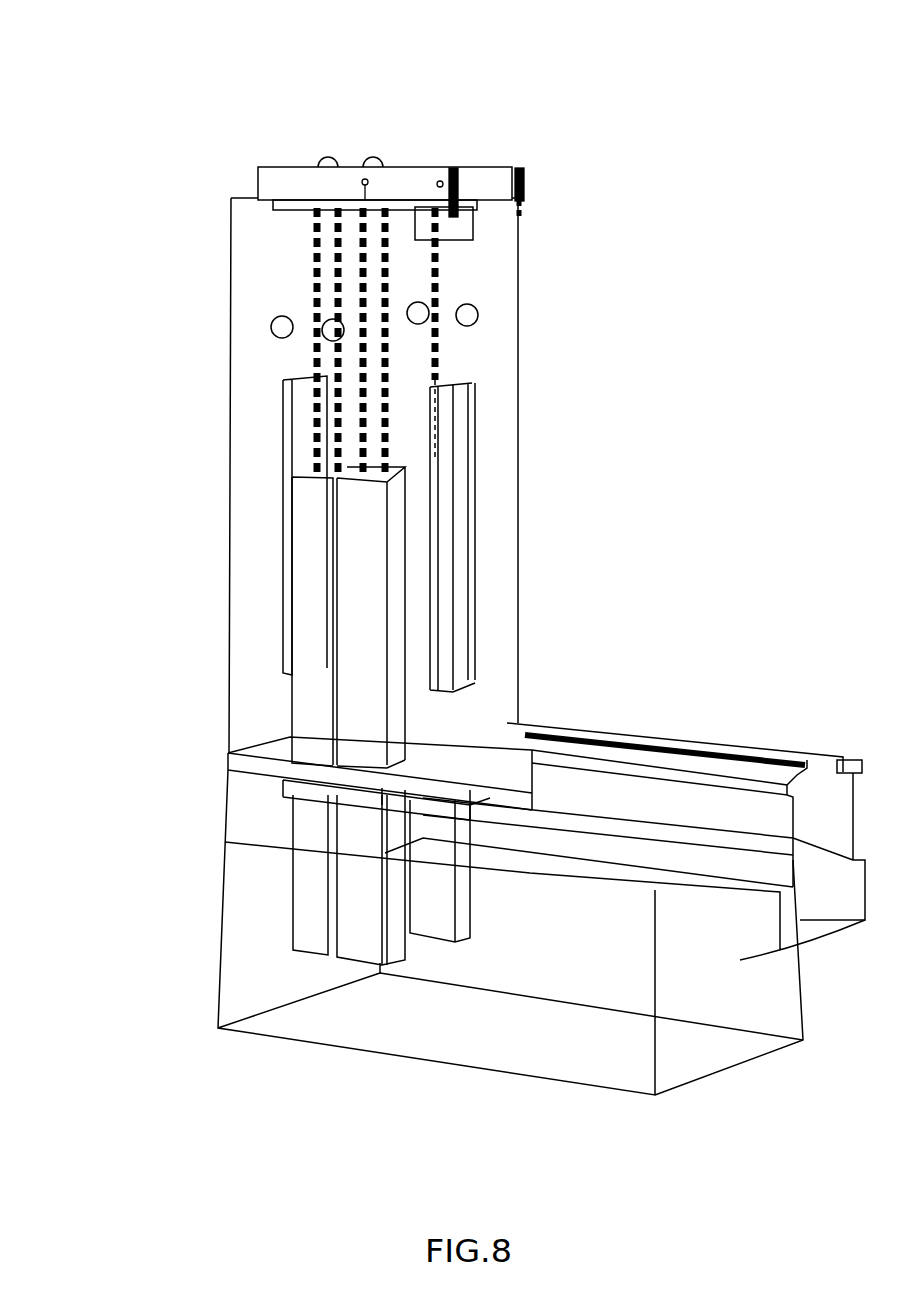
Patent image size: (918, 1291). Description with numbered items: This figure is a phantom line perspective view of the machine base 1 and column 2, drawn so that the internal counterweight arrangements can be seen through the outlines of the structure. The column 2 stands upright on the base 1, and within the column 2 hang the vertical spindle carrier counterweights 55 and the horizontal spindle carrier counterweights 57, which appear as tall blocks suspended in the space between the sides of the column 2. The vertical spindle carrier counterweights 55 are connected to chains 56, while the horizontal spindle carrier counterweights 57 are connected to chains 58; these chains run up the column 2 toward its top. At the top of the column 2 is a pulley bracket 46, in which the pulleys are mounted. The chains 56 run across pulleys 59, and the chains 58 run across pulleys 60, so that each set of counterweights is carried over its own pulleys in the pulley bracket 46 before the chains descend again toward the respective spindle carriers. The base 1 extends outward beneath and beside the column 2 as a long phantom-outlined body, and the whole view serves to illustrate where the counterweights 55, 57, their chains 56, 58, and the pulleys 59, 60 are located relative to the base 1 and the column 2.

The base 1 is at (722, 1085).
The column 2 is at (232, 262).
The pulley bracket 46 is at (258, 170).
The vertical spindle carrier counterweights 55 is at (355, 658).
The chains 56 is at (357, 455).
The horizontal spindle carrier counterweights 57 is at (303, 503).
The chains 58 is at (315, 352).
The pulleys 59 is at (452, 168).
The pulleys 60 is at (328, 157).